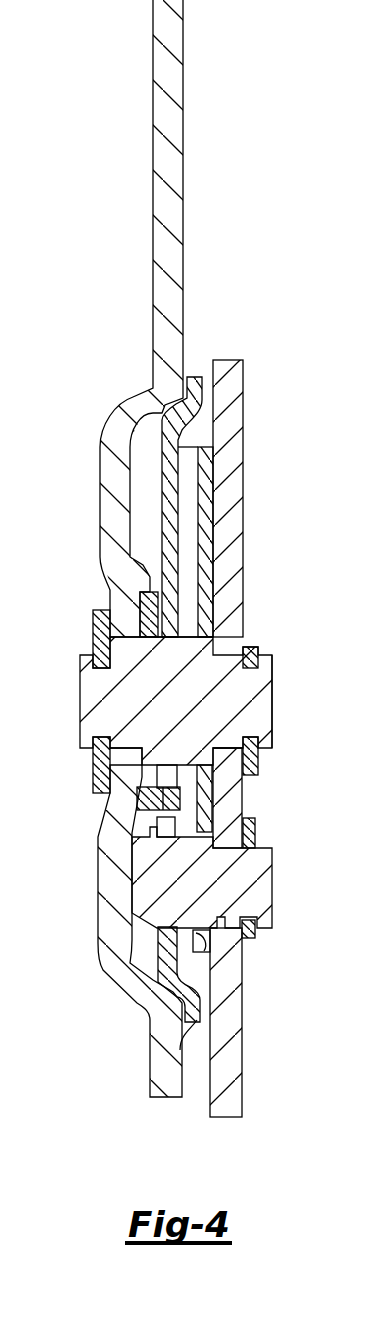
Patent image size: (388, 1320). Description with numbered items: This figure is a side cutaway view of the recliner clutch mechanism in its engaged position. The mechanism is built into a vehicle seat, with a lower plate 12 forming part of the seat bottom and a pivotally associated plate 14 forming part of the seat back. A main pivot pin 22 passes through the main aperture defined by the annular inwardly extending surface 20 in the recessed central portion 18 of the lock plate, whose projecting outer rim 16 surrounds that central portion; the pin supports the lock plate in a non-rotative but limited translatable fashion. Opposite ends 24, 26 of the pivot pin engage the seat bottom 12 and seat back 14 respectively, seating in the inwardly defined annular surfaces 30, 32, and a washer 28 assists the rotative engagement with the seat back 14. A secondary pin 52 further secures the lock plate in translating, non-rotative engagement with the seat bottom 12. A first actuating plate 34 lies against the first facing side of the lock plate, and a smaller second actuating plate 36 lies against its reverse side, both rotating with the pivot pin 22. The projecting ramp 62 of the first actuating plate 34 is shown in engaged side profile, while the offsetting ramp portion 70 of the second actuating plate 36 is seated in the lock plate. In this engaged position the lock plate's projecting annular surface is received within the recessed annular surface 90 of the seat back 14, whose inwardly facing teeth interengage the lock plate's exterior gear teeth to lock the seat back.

The lower plate 12 is at (230, 1047).
The upwardly extending and pivotally associated plate 14 is at (160, 294).
The projecting outer rim 16 is at (180, 1048).
The recessed central portion 18 is at (167, 957).
The annular and inwardly extending surface 20 is at (172, 640).
The main pivot pin 22 is at (107, 705).
The pivot pin end 24 is at (272, 685).
The pivot pin end 26 is at (93, 750).
The washer 28 is at (93, 632).
The inwardly and annular defined surface 30 is at (223, 743).
The inwardly and annular defined surface 32 is at (118, 745).
The first actuating plate 34 is at (205, 510).
The second actuating plate 36 is at (143, 560).
The secondary pin 52 is at (235, 905).
The projecting ramp 62 is at (193, 465).
The projecting ramp 70 is at (188, 800).
The recessed annular surface 90 is at (143, 473).